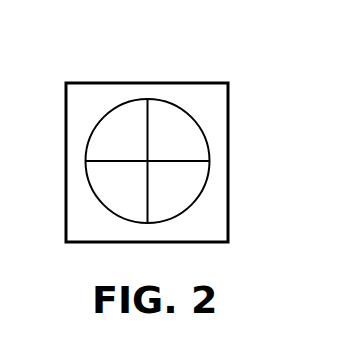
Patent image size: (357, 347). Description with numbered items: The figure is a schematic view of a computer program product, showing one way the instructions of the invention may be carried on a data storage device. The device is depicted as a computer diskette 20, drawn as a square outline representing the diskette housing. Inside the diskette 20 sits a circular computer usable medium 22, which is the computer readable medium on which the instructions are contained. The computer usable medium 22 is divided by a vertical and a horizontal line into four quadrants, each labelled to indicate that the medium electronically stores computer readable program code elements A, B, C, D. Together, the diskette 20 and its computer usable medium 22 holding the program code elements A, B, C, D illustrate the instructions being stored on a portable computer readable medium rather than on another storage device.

The computer diskette 20 is at (185, 85).
The computer usable medium 22 is at (192, 161).
The computer readable program code element A is at (121, 133).
The computer readable program code element B is at (169, 133).
The computer readable program code element C is at (169, 184).
The computer readable program code element D is at (120, 184).